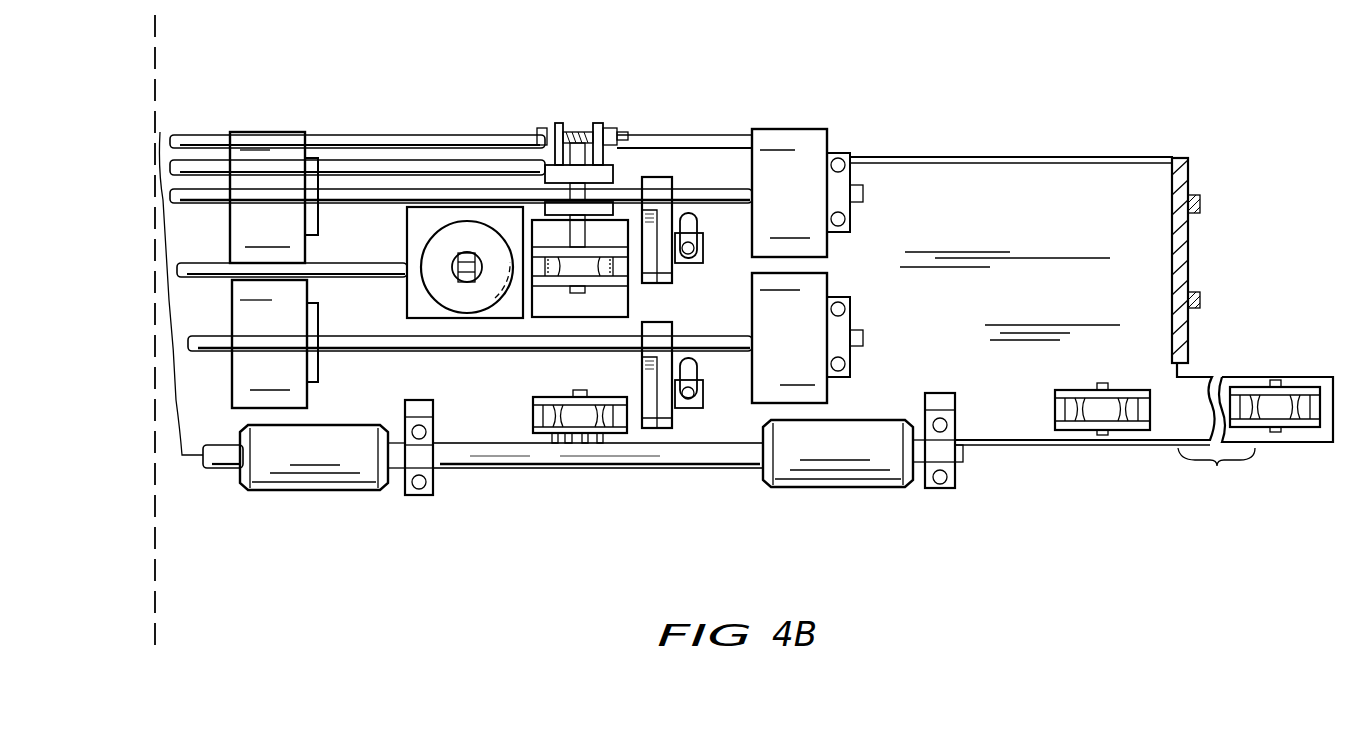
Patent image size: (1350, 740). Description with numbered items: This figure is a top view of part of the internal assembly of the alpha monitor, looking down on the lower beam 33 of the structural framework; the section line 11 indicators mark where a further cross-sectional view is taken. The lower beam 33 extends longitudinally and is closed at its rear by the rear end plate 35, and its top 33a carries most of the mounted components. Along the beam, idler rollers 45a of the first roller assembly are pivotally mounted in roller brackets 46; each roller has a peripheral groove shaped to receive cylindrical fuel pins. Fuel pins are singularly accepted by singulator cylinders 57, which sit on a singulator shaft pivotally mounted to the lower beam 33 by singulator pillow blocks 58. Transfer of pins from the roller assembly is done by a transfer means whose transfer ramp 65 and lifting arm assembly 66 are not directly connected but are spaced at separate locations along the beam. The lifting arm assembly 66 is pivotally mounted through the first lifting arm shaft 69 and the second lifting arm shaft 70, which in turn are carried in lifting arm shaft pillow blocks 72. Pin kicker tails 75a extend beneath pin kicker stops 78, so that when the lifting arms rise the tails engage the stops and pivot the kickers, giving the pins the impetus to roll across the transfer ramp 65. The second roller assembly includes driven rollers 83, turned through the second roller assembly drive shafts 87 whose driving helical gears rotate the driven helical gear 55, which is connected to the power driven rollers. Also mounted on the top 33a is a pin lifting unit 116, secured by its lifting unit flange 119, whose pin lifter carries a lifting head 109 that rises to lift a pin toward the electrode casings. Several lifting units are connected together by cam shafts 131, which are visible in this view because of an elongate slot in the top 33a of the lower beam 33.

The section line 11 is at (218, 130).
The lower beam 33 is at (1103, 148).
The top of lower beam 33a is at (1085, 225).
The rear end plate 35 is at (1196, 250).
The idler rollers 45a is at (612, 362).
The roller brackets 46 is at (545, 398).
The driven helical gear 55 is at (590, 130).
The singulator cylinders 57 is at (368, 482).
The singulator pillow blocks 58 is at (462, 507).
The transfer ramp 65 is at (278, 211).
The lifting arm assembly 66 is at (651, 315).
The first lifting arm shaft 69 is at (729, 337).
The second lifting arm shaft 70 is at (702, 192).
The lifting arm shaft pillow blocks 72 is at (850, 210).
The pin kicker tail 75a is at (688, 215).
The pin kicker stops 78 is at (703, 247).
The driven rollers 83 is at (592, 283).
The second roller assembly drive shafts 87 is at (452, 135).
The lifting head 109 is at (488, 240).
The pin lifting unit 116 is at (506, 240).
The lifting unit flange 119 is at (407, 231).
The cam shafts 131 is at (200, 266).